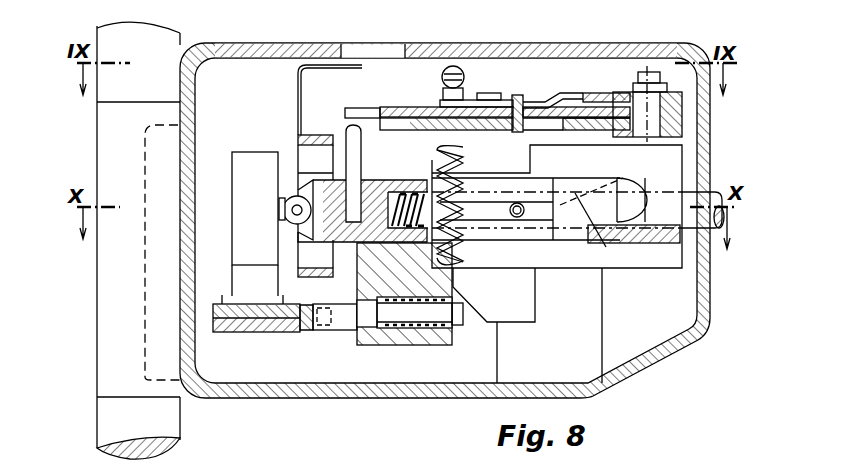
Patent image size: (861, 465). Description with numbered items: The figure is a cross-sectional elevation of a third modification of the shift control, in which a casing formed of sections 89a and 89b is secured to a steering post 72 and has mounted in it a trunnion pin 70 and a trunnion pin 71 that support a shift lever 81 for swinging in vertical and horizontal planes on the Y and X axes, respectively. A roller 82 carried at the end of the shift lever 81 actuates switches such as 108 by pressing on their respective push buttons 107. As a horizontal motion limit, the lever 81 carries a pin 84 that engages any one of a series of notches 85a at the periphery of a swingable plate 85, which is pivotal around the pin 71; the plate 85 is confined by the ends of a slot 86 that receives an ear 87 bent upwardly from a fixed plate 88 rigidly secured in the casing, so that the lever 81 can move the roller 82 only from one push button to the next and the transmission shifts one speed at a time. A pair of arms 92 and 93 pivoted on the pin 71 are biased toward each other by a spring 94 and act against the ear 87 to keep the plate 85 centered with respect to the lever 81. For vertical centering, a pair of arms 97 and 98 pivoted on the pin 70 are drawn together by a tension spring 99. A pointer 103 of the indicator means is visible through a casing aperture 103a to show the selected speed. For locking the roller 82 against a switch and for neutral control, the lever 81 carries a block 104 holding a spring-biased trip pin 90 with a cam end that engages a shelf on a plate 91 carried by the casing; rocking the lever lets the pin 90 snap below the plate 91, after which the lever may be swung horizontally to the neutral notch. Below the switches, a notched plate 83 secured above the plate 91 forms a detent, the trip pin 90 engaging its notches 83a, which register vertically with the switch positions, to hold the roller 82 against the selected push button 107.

The trunnion pin 70 is at (705, 230).
The trunnion pin 71 is at (652, 124).
The steering post 72 is at (110, 136).
The shift lever 81 is at (425, 329).
The roller 82 is at (289, 196).
The notched plate 83 is at (248, 332).
The notches 83a is at (305, 325).
The pin 84 is at (352, 140).
The swingable plate 85 is at (400, 92).
The notches 85a is at (362, 108).
The slot 86 is at (535, 106).
The ear 87 is at (517, 95).
The fixed plate 88 is at (465, 118).
The casing section 89a is at (563, 57).
The casing section 89b is at (627, 370).
The trip pin 90 is at (340, 322).
The plate 91 is at (297, 333).
The arm 92 is at (571, 97).
The arm 93 is at (601, 97).
The spring 94 is at (459, 67).
The arm 97 is at (603, 182).
The arm 98 is at (538, 235).
The tension spring 99 is at (462, 250).
The pointer 103 is at (318, 64).
The casing aperture 103a is at (366, 51).
The block 104 is at (385, 268).
The push button 107 is at (281, 198).
The switch 108 is at (255, 224).
The X axis X is at (643, 213).
The Y axis Y is at (650, 103).